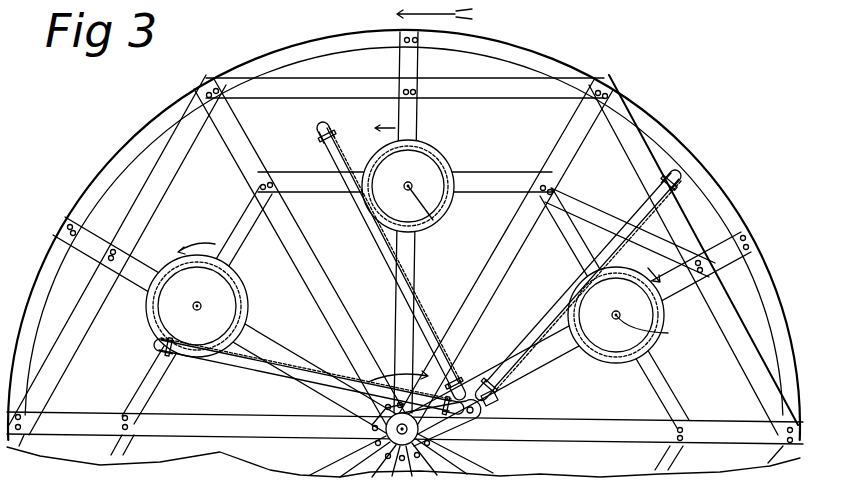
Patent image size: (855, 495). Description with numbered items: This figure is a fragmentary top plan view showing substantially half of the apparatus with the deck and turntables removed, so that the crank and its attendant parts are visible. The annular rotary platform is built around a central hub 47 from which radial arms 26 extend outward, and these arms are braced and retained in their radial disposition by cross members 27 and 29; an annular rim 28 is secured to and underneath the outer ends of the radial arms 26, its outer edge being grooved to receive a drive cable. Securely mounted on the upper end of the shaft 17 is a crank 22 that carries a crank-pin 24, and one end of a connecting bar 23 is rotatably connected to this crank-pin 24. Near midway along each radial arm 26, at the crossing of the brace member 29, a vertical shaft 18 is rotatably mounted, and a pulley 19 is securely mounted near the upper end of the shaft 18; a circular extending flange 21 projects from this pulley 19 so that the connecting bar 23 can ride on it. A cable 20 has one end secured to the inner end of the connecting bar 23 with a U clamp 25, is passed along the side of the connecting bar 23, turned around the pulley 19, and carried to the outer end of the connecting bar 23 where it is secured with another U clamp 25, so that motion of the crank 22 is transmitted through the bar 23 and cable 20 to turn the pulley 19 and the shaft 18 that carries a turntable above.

The shaft 17 is at (358, 438).
The vertical shaft 18 is at (440, 218).
The pulley 19 is at (436, 183).
The cable 20 is at (343, 141).
The circular extending flange 21 is at (437, 150).
The crank 22 is at (472, 434).
The connecting bar 23 is at (366, 220).
The crank-pin 24 is at (496, 410).
The U clamp 25 is at (315, 132).
The radial arms 26 is at (416, 116).
The cross members 27 is at (306, 90).
The annular rim 28 is at (576, 67).
The cross members 29 is at (511, 182).
The hub 47 is at (360, 420).